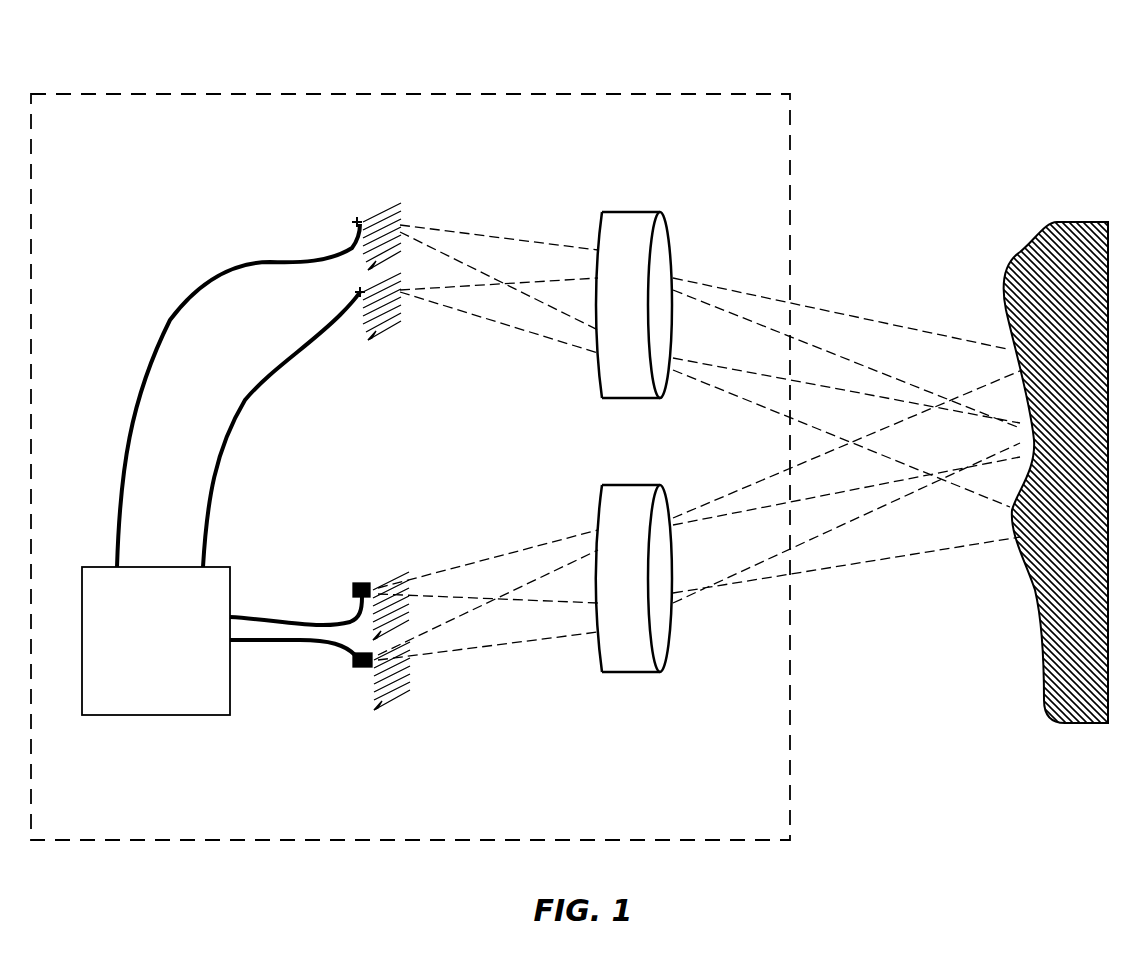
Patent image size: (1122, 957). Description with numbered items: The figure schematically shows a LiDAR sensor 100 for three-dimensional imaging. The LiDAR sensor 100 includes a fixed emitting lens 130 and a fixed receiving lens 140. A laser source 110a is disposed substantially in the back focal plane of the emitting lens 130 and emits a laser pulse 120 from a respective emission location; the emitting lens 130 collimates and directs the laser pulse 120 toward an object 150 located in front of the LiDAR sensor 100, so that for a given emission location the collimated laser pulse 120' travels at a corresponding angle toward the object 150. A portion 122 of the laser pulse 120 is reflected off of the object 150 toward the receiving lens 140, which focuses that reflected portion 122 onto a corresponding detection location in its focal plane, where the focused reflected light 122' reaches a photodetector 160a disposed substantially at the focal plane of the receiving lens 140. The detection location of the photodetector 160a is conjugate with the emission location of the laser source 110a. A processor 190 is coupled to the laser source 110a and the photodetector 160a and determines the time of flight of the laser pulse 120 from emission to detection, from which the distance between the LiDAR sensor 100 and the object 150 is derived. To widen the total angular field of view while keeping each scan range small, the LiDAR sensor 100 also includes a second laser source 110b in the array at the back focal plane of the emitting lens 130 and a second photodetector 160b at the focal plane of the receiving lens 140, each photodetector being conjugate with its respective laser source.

The LiDAR sensor 100 is at (414, 93).
The laser source 110a is at (358, 212).
The second laser source 110b is at (355, 305).
The laser pulse 120 is at (499, 261).
The collimated laser pulse 120' is at (846, 375).
The portion of the laser pulse 122 is at (847, 498).
The focused reflected light 122' is at (488, 575).
The emitting lens 130 is at (673, 253).
The receiving lens 140 is at (673, 650).
The object 150 is at (1050, 238).
The photodetector 160a is at (360, 583).
The second photodetector 160b is at (359, 668).
The processor 190 is at (152, 715).